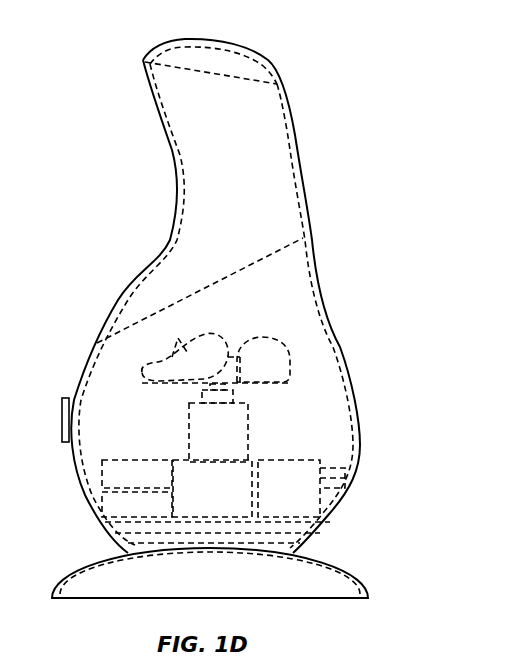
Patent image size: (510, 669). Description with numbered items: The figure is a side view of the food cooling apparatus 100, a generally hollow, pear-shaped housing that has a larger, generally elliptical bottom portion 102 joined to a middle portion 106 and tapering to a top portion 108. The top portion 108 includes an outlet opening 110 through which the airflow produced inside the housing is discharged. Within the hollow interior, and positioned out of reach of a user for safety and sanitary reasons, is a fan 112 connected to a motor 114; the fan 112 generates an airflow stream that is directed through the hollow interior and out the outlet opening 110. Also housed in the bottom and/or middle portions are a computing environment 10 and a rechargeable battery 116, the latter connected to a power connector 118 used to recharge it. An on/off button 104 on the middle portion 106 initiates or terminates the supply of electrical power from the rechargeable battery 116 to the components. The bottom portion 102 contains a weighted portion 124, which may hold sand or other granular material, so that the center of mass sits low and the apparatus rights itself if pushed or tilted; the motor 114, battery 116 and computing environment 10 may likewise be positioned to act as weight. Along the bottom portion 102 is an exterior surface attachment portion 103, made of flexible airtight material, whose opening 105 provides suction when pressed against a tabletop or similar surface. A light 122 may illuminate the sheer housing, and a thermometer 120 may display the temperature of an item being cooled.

The food cooling apparatus 100 is at (92, 54).
The bottom portion 102 is at (360, 433).
The exterior surface attachment portion 103 is at (72, 577).
The on/off button 104 is at (62, 413).
The opening 105 is at (313, 577).
The middle portion 106 is at (340, 347).
The top portion 108 is at (270, 62).
The outlet opening 110 is at (218, 165).
The fan 112 is at (260, 337).
The motor 114 is at (218, 423).
The computing environment 10 is at (212, 488).
The rechargeable battery 116 is at (289, 488).
The power connector 118 is at (353, 477).
The thermometer 120 is at (137, 504).
The light 122 is at (137, 474).
The weighted portion 124 is at (270, 532).